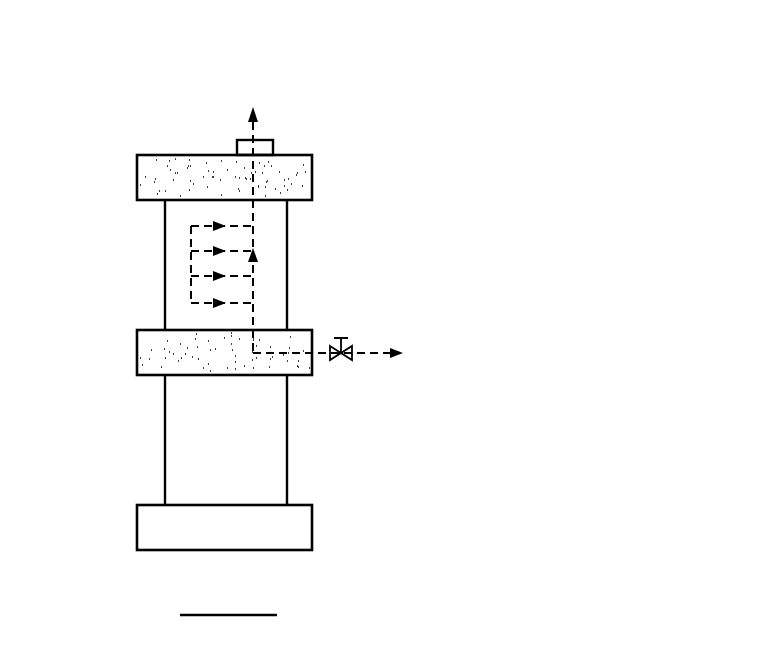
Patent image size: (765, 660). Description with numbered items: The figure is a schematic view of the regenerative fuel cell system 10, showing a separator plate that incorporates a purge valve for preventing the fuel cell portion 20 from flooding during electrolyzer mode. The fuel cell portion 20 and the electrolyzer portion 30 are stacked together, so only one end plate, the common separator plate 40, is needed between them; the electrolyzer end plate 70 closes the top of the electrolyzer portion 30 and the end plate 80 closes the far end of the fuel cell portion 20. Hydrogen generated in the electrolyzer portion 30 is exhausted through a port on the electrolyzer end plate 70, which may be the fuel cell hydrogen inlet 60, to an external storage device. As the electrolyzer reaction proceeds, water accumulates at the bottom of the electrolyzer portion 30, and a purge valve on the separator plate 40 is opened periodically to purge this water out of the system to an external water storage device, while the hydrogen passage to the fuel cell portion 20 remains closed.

The regenerative fuel cell system 10 is at (284, 93).
The fuel cell portion 20 is at (165, 441).
The electrolyzer portion 30 is at (165, 258).
The common separator plate 40 is at (142, 349).
The fuel cell hydrogen inlet 60 is at (246, 143).
The electrolyzer end plate 70 is at (142, 179).
The fuel cell end plate 80 is at (142, 521).